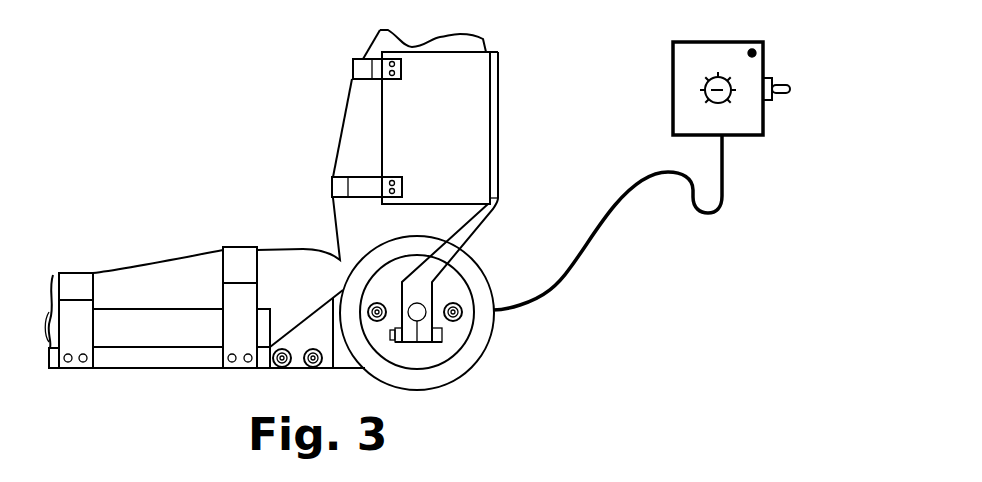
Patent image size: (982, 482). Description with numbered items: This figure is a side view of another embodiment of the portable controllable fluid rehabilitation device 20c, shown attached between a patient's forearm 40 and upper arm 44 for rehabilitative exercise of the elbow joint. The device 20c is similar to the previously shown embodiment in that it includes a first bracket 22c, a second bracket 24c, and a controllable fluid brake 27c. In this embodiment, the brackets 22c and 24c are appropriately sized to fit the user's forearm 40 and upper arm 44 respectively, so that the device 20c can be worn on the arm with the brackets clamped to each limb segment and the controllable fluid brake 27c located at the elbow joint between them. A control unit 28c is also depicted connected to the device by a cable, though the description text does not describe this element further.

The portable controllable fluid rehabilitation device 20c is at (322, 217).
The first bracket 22c is at (377, 107).
The second bracket 24c is at (125, 370).
The controllable fluid brake 27c is at (488, 348).
The control dial 28c is at (673, 65).
The forearm 40 is at (168, 300).
The upper arm 44 is at (366, 153).